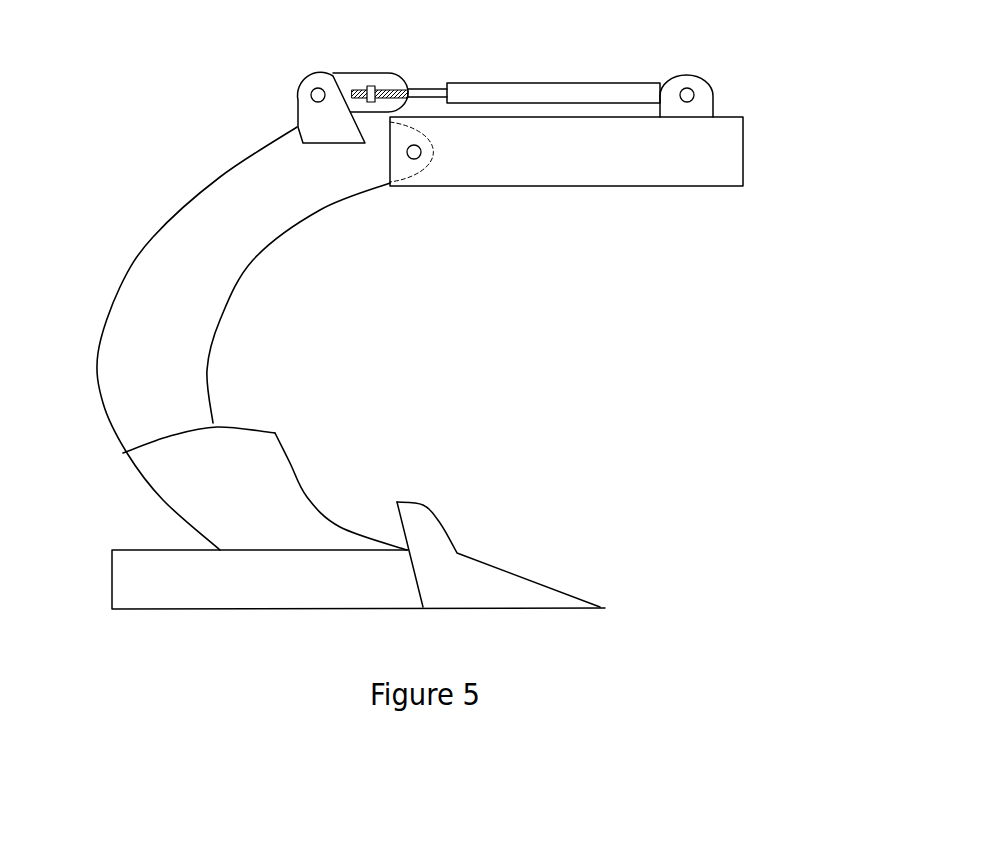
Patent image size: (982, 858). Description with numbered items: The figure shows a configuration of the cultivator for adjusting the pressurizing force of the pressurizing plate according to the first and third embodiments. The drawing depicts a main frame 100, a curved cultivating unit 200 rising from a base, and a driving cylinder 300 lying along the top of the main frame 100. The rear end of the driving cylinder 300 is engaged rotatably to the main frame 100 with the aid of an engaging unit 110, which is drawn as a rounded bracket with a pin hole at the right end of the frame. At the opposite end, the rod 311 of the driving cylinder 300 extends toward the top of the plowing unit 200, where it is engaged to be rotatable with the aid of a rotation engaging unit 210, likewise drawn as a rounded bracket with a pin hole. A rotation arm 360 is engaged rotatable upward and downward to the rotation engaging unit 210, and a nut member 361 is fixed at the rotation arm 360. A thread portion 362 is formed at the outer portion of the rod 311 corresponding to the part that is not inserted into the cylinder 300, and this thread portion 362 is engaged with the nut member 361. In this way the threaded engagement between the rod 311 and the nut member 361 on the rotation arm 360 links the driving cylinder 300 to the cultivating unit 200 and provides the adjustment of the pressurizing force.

The main frame 100 is at (745, 152).
The engaging unit 110 is at (716, 92).
The cultivating unit 200 is at (103, 293).
The rotation engaging unit 210 is at (297, 93).
The driving cylinder 300 is at (522, 83).
The rod 311 is at (415, 86).
The rotation arm 360 is at (357, 107).
The nut member 361 is at (370, 86).
The thread portion 362 is at (358, 88).